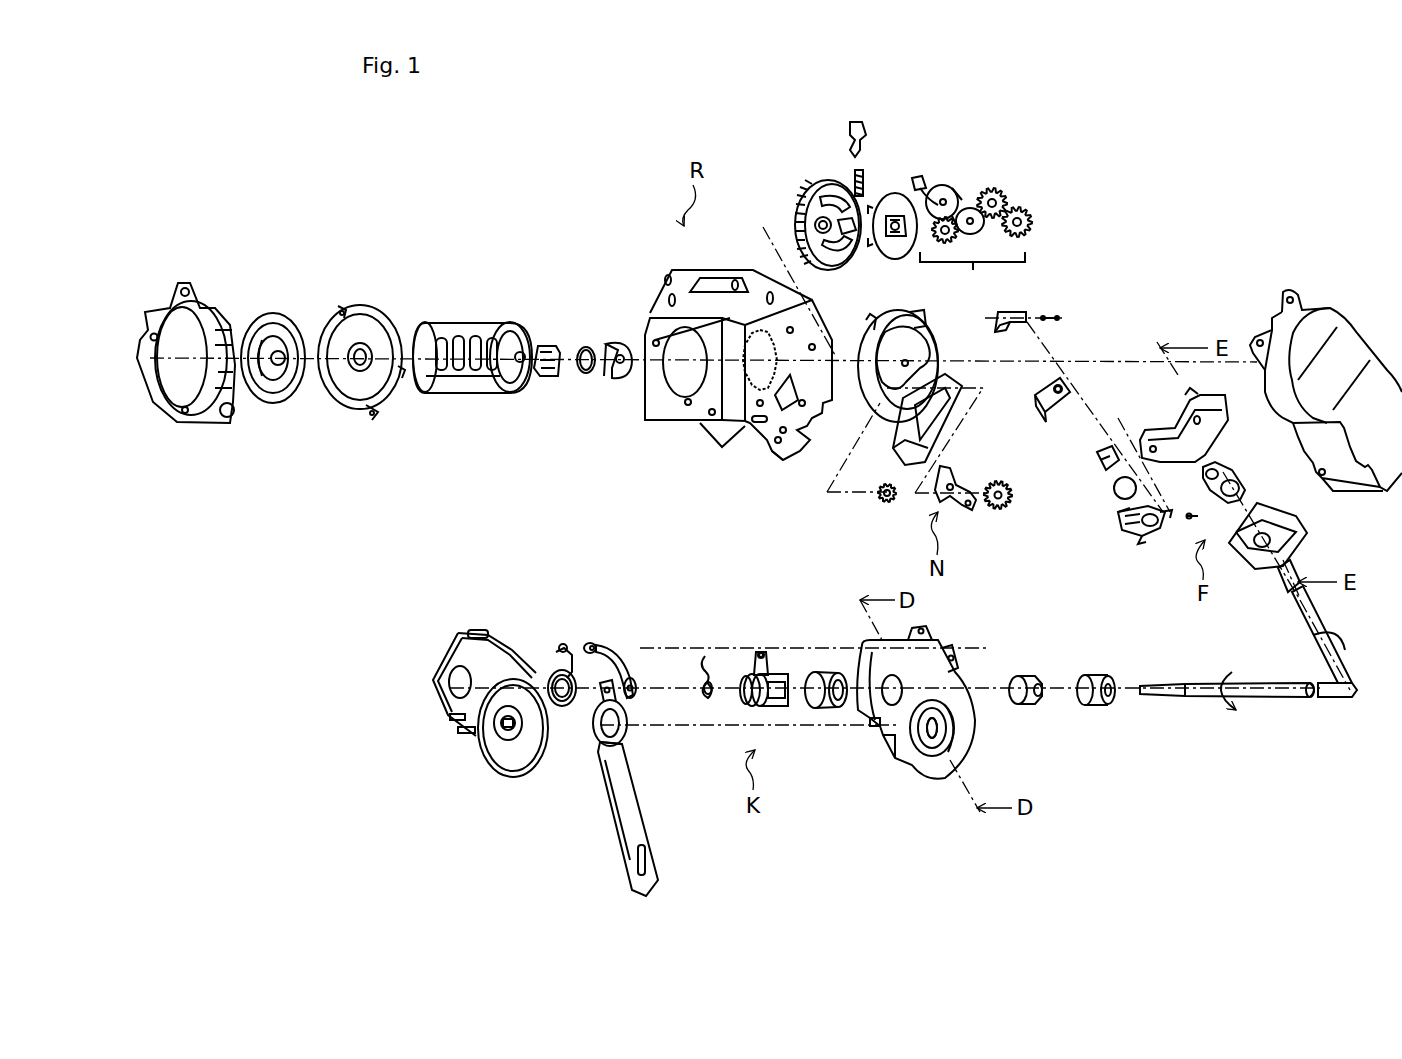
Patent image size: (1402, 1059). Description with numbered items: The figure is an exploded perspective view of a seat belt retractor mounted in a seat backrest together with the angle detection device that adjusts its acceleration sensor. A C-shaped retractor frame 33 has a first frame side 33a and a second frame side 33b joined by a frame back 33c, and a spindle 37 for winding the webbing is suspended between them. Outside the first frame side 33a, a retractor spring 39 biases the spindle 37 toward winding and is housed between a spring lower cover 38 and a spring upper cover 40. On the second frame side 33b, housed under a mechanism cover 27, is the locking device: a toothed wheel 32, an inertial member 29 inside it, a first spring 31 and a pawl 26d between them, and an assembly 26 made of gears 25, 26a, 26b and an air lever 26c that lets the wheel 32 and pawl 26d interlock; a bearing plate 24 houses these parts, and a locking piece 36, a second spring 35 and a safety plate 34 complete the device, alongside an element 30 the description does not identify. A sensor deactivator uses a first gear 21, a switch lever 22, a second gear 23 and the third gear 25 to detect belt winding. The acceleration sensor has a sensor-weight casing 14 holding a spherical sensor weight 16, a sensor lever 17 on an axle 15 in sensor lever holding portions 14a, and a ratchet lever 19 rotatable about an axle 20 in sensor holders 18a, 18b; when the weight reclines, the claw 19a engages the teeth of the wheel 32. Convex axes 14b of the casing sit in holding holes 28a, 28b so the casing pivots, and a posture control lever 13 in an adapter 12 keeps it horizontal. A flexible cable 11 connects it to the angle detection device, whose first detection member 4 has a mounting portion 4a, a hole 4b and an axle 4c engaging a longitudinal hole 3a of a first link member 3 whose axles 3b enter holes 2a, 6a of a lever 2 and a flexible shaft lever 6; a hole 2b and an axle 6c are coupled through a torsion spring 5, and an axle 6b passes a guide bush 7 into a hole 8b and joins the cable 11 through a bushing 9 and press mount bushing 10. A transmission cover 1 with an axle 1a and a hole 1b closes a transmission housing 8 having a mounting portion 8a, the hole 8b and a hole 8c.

The transmission cover 1 is at (462, 636).
The axle 1a is at (505, 735).
The hole 1b is at (452, 674).
The lever 2 is at (568, 630).
The hole 2a is at (562, 644).
The hole 2b is at (556, 672).
The first link member 3 is at (628, 646).
The longitudinal hole 3a is at (636, 698).
The axles 3b is at (594, 642).
The first detection member 4 is at (550, 830).
The mounting portion 4a is at (615, 812).
The hole 4b is at (608, 748).
The axle 4c is at (598, 738).
The torsion spring 5 is at (708, 656).
The flexible shaft lever 6 is at (770, 672).
The hole 6a is at (763, 650).
The axle 6b is at (770, 706).
The axle 6c is at (746, 704).
The guide bush 7 is at (828, 672).
The transmission housing 8 is at (968, 648).
The mounting portion 8a is at (952, 655).
The hole 8b is at (884, 740).
The hole 8c is at (930, 740).
The bushing 9 is at (1022, 676).
The press mount bushing 10 is at (1092, 676).
The flexible cable 11 is at (1200, 684).
The adapter 12 is at (1262, 570).
The posture control lever 13 is at (1247, 484).
The sensor-weight casing 14 is at (1155, 538).
The sensor lever holding portions 14a is at (1140, 536).
The convex axes 14b is at (1120, 512).
The axle 15 is at (1190, 512).
The sensor weight 16 is at (1114, 486).
The sensor lever 17 is at (1097, 455).
The sensor holder 18a is at (1065, 388).
The sensor holder 18b is at (1195, 412).
The ratchet lever 19 is at (1018, 310).
The claw 19a is at (998, 332).
The axle 20 is at (1050, 314).
The first gear 21 is at (1008, 508).
The switch lever 22 is at (938, 504).
The second gear 23 is at (880, 502).
The bearing plate 24 is at (888, 316).
The third gear 25 is at (896, 212).
The assembly 26 is at (1010, 201).
The gear 26a is at (1008, 200).
The gear 26b is at (1033, 222).
The air lever 26c is at (946, 215).
The pawl 26d is at (918, 176).
The mechanism cover 27 is at (1358, 328).
The holding hole 28a is at (1040, 412).
The holding hole 28b is at (1215, 435).
The inertial member 29 is at (880, 188).
The clip 30 is at (846, 128).
The first spring 31 is at (852, 170).
The wheel 32 is at (798, 198).
The retractor frame 33 is at (715, 450).
The first frame side 33a is at (672, 405).
The second frame side 33b is at (772, 432).
The frame back 33c is at (713, 288).
The safety plate 34 is at (612, 385).
The second spring 35 is at (582, 380).
The locking piece 36 is at (538, 385).
The spindle 37 is at (455, 400).
The spring lower cover 38 is at (350, 418).
The retractor spring 39 is at (275, 418).
The spring upper cover 40 is at (165, 425).